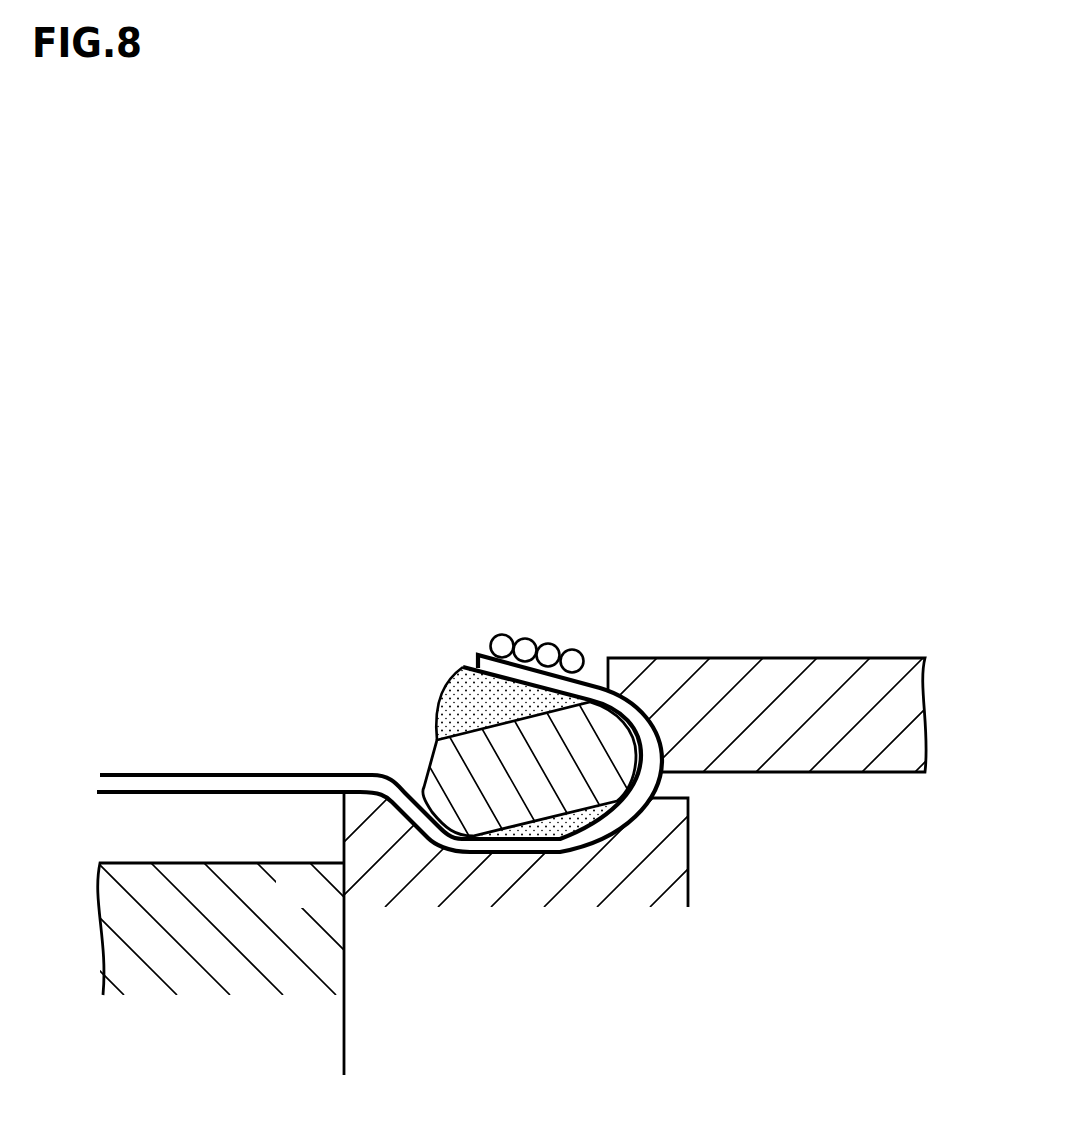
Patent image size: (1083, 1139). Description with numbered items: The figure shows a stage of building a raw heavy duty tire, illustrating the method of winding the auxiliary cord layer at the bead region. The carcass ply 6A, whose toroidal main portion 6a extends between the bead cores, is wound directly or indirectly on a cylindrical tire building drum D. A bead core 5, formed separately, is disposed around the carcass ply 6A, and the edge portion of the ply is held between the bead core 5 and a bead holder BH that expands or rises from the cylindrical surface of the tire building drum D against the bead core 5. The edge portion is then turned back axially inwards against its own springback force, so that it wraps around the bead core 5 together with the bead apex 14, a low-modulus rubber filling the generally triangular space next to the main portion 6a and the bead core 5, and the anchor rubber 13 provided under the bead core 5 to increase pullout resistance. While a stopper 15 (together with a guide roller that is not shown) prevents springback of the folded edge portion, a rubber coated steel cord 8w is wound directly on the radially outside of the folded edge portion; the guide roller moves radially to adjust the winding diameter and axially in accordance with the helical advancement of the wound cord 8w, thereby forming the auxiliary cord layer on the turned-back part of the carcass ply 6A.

The bead core 5 is at (478, 770).
The carcass ply 6A is at (263, 775).
The main portion 6a is at (173, 775).
The rubber coated steel cord 8w is at (588, 648).
The anchor rubber 13 is at (553, 822).
The bead apex 14 is at (470, 700).
The stopper 15 is at (750, 700).
The tire building drum D is at (308, 915).
The bead holder BH is at (645, 883).